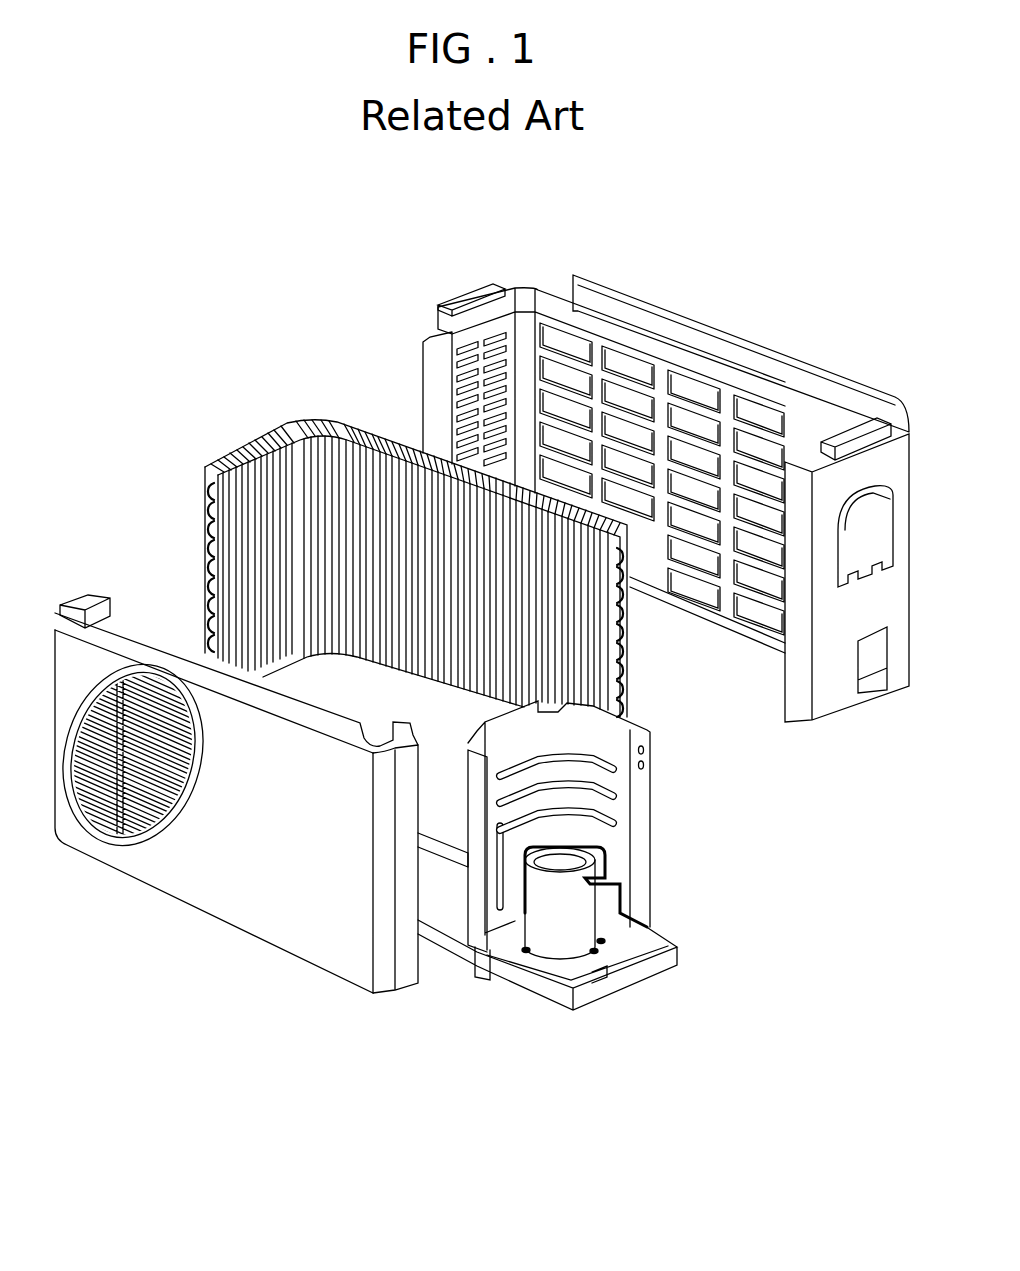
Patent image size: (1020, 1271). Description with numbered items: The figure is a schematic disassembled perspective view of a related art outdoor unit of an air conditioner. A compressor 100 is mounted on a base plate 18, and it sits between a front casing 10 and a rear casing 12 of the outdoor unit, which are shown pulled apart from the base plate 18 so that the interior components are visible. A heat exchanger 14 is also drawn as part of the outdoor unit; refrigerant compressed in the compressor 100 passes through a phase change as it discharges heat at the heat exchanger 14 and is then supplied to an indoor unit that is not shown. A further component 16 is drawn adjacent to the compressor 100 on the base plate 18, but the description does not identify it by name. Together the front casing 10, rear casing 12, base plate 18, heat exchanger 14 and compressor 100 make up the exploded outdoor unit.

The front casing 10 is at (307, 920).
The rear casing 12 is at (829, 688).
The heat exchanger 14 is at (292, 410).
The partition plate 16 is at (617, 837).
The base plate 18 is at (645, 975).
The compressor 100 is at (553, 930).